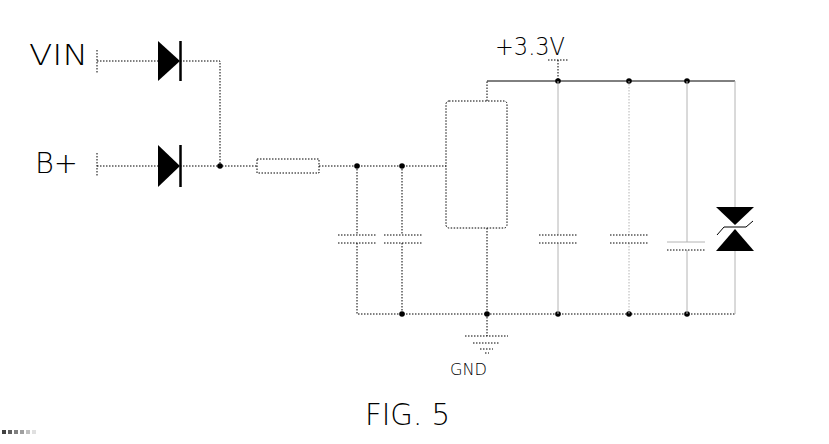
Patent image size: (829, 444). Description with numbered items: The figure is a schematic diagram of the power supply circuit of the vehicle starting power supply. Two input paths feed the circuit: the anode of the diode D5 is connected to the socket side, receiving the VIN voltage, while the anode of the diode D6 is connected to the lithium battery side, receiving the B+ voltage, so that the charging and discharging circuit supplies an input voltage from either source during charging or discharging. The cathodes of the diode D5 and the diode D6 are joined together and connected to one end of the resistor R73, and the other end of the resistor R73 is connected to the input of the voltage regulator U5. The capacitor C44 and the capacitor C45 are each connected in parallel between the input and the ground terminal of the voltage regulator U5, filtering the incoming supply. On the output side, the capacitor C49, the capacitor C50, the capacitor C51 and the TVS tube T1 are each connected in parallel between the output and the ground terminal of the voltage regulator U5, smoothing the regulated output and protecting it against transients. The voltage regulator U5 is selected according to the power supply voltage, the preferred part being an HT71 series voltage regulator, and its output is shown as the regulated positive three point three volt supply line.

The diode D5 is at (159, 47).
The diode D6 is at (159, 152).
The resistor R73 is at (287, 152).
The voltage regulator U5 is at (491, 197).
The capacitor C44 is at (334, 210).
The capacitor C45 is at (423, 240).
The capacitor C49 is at (540, 197).
The capacitor C50 is at (610, 197).
The capacitor C51 is at (675, 197).
The TVS tube T1 is at (752, 197).